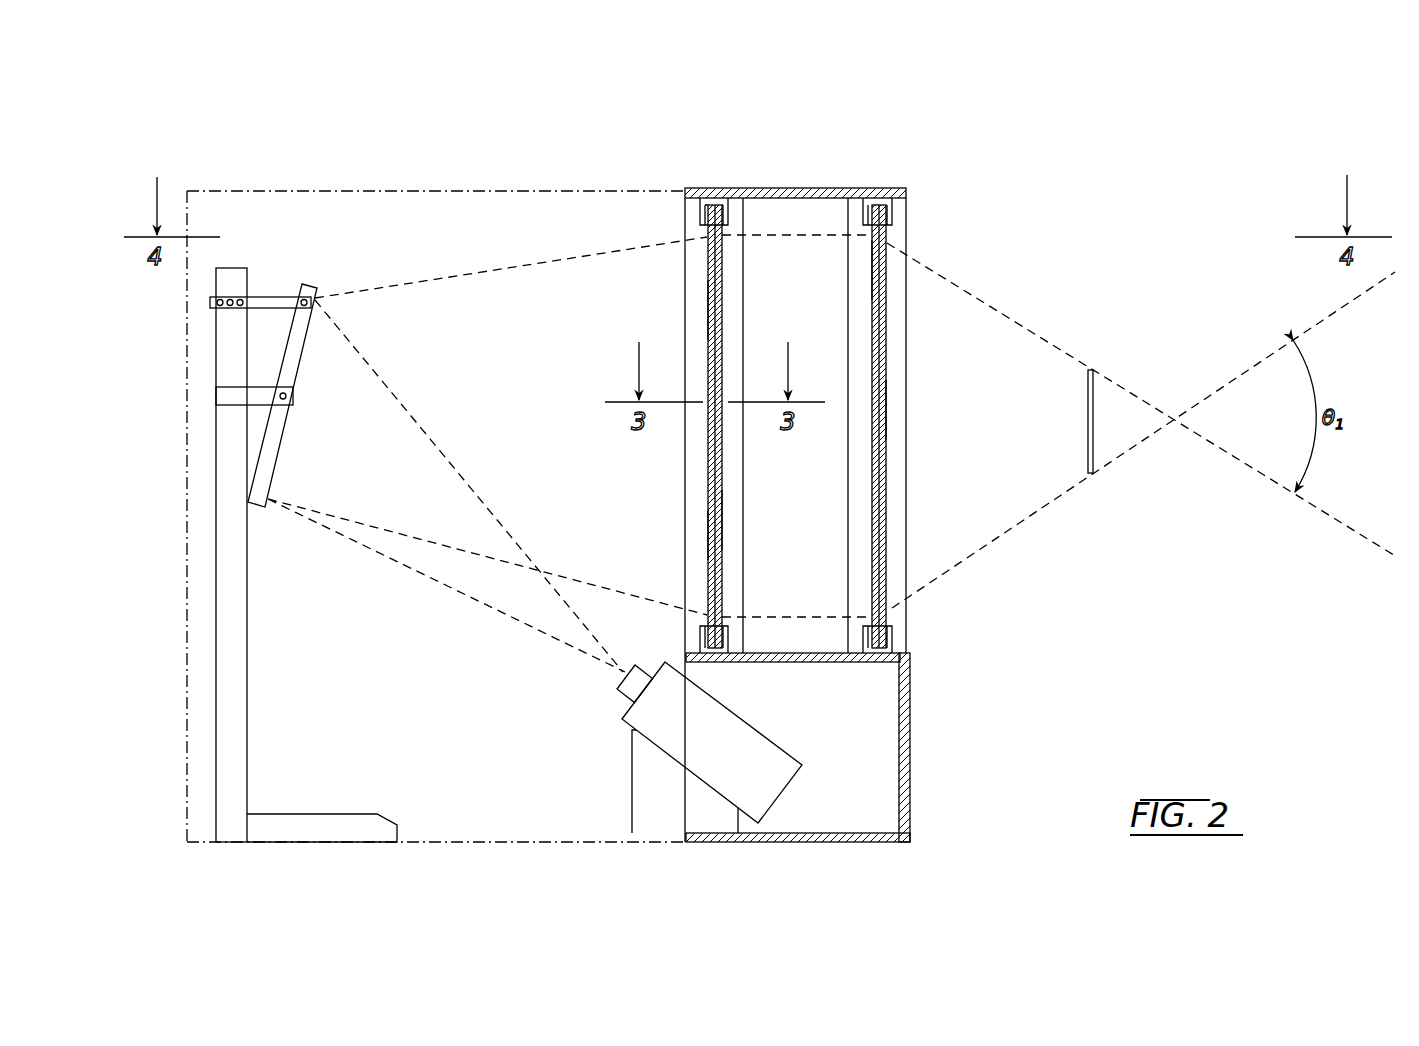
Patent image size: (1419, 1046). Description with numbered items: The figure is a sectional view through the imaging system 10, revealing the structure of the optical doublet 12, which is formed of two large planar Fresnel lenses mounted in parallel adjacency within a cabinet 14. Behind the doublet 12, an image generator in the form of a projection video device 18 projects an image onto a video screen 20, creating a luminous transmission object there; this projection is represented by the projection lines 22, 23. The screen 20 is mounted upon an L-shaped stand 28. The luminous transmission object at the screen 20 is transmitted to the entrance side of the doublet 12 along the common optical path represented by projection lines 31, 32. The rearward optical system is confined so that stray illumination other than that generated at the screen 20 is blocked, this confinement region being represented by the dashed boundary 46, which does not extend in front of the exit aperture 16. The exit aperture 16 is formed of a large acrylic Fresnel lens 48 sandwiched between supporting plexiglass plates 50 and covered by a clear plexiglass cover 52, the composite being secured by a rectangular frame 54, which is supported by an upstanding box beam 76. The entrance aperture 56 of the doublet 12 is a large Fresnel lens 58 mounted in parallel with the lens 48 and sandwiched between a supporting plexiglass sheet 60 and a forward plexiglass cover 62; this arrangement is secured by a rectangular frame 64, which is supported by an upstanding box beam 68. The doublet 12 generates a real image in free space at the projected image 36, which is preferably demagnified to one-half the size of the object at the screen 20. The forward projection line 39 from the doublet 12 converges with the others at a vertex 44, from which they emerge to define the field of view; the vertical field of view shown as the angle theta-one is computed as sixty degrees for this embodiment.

The imaging system 10 is at (709, 120).
The optical doublet 12 is at (933, 140).
The cabinet 14 is at (910, 772).
The exit aperture 16 is at (962, 242).
The projection video device 18 is at (757, 728).
The video screen 20 is at (297, 375).
The projection line 22 is at (495, 610).
The projection line 23 is at (482, 497).
The L-shaped stand 28 is at (247, 740).
The projection line 31 is at (487, 268).
The projection line 32 is at (1013, 330).
The projected image 36 is at (1093, 443).
The forward projection line 39 is at (993, 542).
The vertex 44 is at (1175, 418).
The dashed boundary 46 is at (378, 191).
The Fresnel lens 48 is at (886, 317).
The supporting plexiglass plate 50 is at (871, 267).
The clear plexiglass cover 52 is at (887, 405).
The rectangular frame 54 is at (895, 213).
The entrance aperture 56 is at (702, 293).
The Fresnel lens 58 is at (716, 310).
The supporting plexiglass sheet 60 is at (723, 522).
The forward plexiglass cover 62 is at (707, 537).
The rectangular frame 64 is at (697, 213).
The box beam 68 is at (694, 467).
The box beam 76 is at (903, 467).